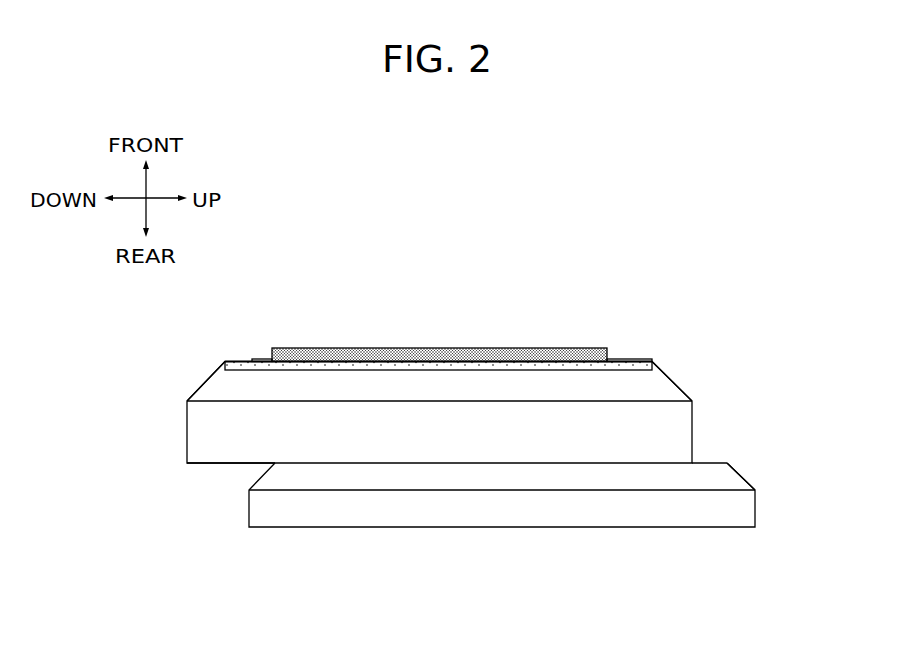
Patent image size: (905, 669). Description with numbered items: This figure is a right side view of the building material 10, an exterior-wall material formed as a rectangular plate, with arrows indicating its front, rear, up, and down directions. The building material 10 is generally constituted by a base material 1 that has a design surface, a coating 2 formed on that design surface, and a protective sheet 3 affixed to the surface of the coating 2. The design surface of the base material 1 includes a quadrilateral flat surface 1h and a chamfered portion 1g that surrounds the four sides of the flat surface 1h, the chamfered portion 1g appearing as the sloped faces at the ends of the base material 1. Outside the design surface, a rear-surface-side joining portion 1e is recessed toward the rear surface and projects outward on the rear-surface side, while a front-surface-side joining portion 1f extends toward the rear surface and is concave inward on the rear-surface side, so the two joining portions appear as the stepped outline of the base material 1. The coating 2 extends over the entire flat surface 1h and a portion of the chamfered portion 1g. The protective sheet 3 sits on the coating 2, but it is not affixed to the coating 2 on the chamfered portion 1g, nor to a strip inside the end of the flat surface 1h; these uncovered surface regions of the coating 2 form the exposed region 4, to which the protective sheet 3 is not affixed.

The building material 10 is at (686, 185).
The base material 1 is at (362, 437).
The rear-surface-side joining portion 1e is at (707, 462).
The front-surface-side joining portion 1f is at (217, 463).
The chamfered portion 1g is at (203, 378).
The flat surface 1h is at (257, 361).
The coating 2 is at (658, 363).
The protective sheet 3 is at (437, 357).
The exposed region 4 is at (253, 361).